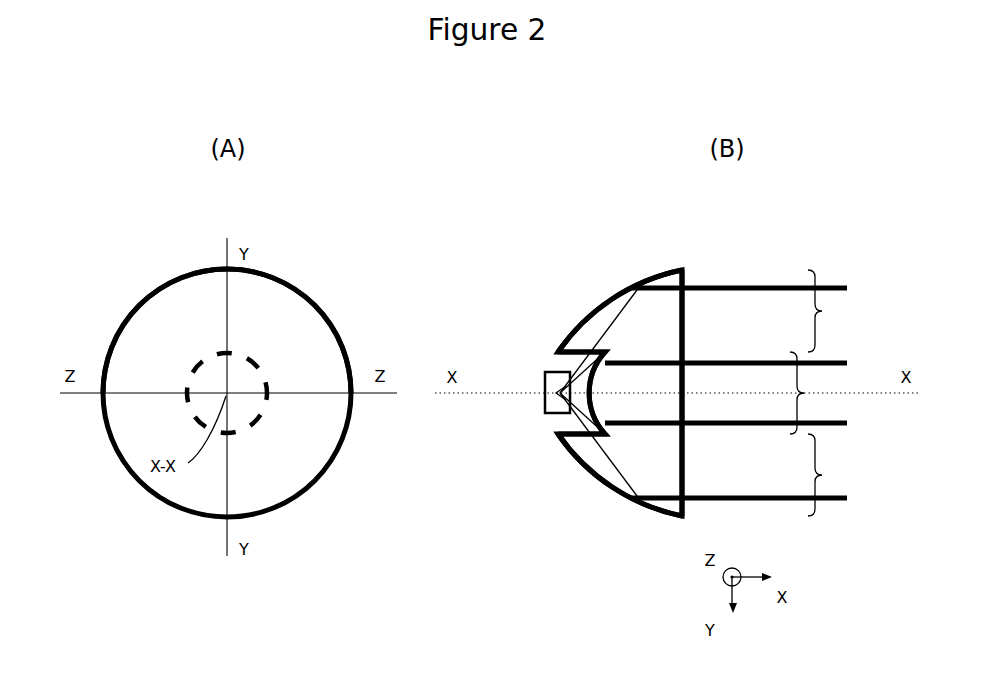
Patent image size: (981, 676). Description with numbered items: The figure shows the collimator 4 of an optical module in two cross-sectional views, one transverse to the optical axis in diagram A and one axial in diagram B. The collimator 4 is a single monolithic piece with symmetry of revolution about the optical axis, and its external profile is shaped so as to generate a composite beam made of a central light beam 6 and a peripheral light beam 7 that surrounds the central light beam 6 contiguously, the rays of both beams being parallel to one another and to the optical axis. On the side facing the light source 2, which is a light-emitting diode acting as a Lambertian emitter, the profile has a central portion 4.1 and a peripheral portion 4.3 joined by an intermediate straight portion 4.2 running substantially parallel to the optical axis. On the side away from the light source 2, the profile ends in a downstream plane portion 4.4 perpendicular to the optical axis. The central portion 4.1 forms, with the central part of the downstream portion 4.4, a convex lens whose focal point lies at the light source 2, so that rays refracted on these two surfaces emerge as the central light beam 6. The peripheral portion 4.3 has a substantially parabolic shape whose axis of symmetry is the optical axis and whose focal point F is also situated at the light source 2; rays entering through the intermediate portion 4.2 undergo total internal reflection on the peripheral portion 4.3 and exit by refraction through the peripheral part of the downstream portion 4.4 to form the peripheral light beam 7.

The light source 2 is at (545, 405).
The collimator 4 is at (110, 316).
The central portion 4.1 is at (249, 384).
The intermediate straight portion 4.2 is at (560, 349).
The peripheral portion 4.3 is at (290, 300).
The downstream plane portion 4.4 is at (308, 469).
The central light beam 6 is at (804, 393).
The peripheral light beam 7 is at (825, 393).
The focal point F is at (546, 392).